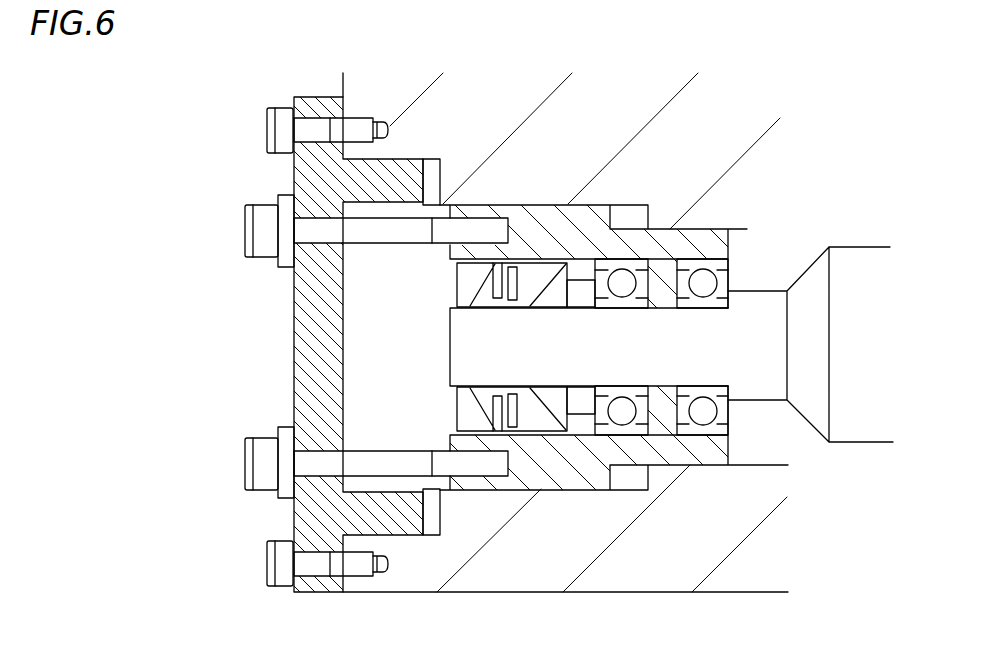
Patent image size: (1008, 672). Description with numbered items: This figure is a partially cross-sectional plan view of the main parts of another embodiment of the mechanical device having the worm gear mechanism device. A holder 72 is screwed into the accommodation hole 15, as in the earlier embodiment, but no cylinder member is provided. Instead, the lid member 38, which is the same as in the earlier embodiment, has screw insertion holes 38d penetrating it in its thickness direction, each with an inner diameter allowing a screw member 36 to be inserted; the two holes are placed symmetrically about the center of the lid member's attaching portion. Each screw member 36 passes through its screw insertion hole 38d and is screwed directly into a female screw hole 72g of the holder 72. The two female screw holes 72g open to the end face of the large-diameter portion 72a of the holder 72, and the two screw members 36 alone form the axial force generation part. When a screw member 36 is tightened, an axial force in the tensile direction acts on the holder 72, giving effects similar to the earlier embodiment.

The accommodation hole 15 is at (750, 467).
The screw member 36 is at (255, 227).
The lid member 38 is at (287, 595).
The screw insertion hole 38d is at (294, 180).
The holder 72 is at (633, 477).
The large-diameter portion 72a is at (547, 463).
The female screw hole 72g is at (455, 262).